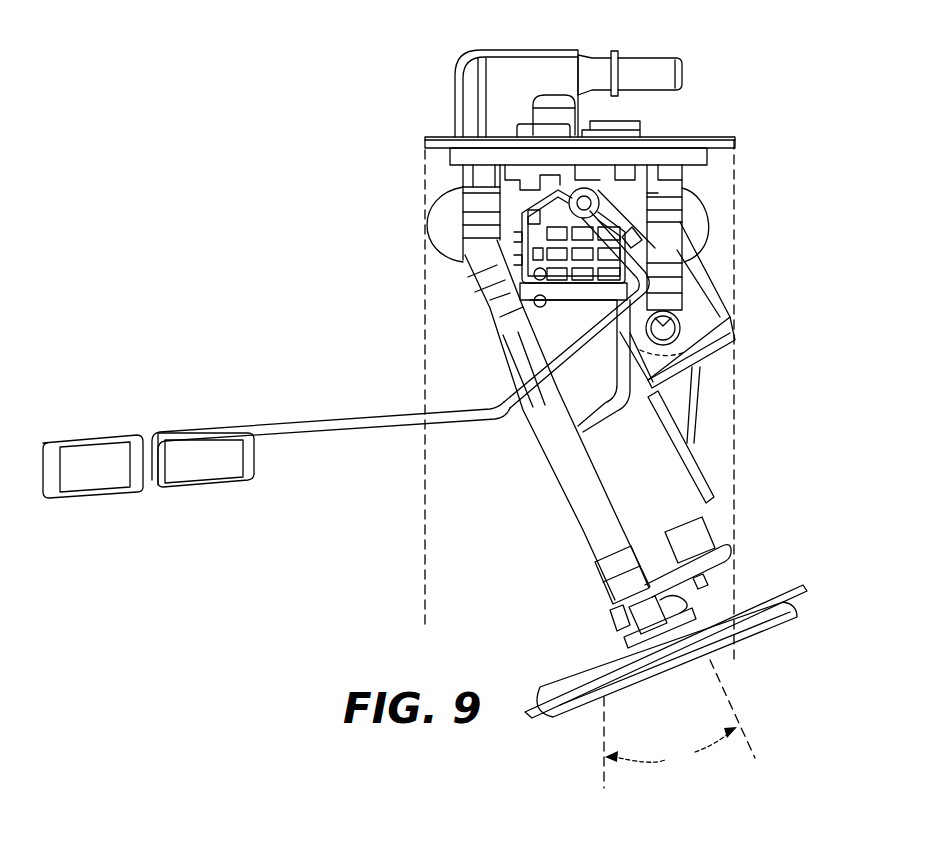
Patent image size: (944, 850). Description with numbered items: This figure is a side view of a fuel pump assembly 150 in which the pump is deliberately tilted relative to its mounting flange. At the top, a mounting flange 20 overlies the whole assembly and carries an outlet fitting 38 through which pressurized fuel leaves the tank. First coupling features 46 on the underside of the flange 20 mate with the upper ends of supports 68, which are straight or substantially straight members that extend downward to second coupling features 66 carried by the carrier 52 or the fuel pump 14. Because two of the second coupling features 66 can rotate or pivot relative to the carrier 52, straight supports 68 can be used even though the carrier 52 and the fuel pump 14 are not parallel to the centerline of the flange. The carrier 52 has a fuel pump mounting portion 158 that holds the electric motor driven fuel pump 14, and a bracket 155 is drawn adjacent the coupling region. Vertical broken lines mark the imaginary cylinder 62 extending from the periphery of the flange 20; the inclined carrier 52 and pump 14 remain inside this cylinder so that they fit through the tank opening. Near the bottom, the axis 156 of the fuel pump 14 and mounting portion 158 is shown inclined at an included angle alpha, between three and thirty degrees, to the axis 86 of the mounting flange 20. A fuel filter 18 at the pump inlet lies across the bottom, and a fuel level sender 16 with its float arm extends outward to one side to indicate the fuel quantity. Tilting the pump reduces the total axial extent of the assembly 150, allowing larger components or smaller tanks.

The fuel pump assembly 150 is at (727, 97).
The mounting flange 20 is at (437, 135).
The outlet fitting 38 is at (638, 63).
The first coupling features 46 is at (480, 172).
The supports 68 is at (498, 252).
The second coupling features 66 is at (673, 322).
The support bracket 155 is at (735, 340).
The carrier 52 is at (692, 439).
The fuel level sender 16 is at (458, 400).
The fuel pump mounting portion 158 is at (604, 490).
The fuel pump 14 is at (594, 530).
The fuel filter 18 is at (785, 578).
The imaginary cylinder 62 is at (735, 470).
The axis of the mounting flange 86 is at (604, 740).
The axis of the fuel pump 156 is at (722, 684).